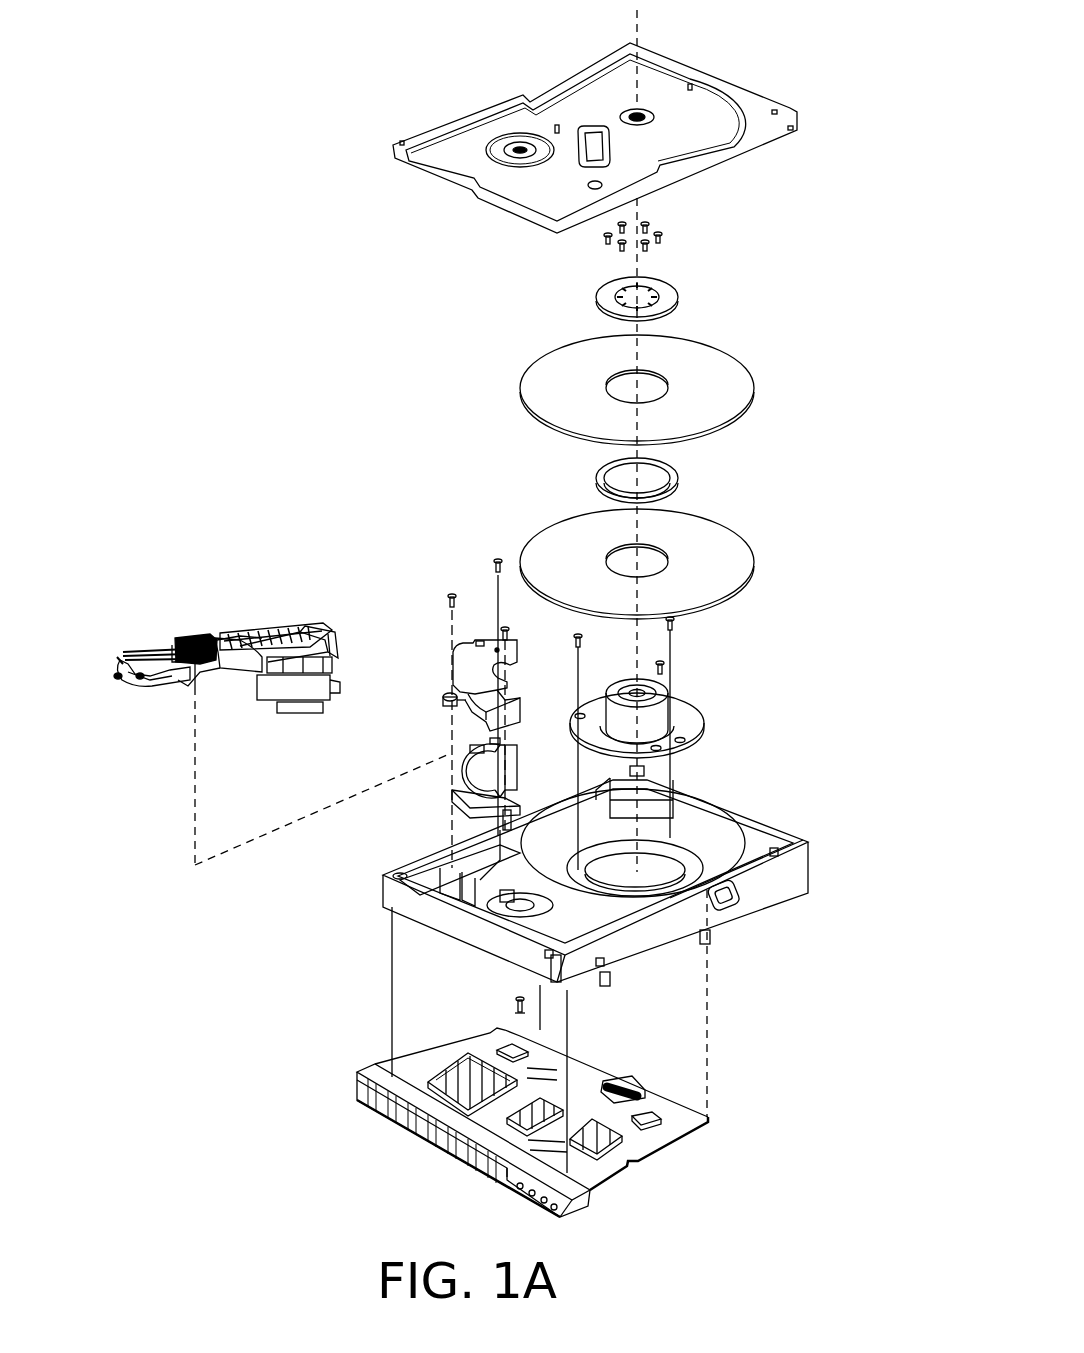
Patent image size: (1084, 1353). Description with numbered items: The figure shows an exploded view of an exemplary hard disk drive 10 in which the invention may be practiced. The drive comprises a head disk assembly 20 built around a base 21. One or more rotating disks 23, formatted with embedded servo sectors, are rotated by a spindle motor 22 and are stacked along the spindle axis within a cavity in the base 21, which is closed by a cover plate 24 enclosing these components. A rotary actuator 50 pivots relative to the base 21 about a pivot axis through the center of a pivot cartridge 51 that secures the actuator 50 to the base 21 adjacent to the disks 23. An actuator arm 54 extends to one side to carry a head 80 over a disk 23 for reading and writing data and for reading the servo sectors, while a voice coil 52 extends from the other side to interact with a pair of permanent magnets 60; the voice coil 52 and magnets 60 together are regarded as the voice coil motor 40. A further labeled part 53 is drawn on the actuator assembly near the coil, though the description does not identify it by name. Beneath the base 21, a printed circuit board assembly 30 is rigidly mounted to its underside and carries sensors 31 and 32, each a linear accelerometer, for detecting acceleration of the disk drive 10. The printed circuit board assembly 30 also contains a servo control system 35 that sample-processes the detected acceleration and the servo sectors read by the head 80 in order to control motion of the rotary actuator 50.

The hard disk drive 10 is at (268, 150).
The head disk assembly 20 is at (827, 5).
The base 21 is at (795, 834).
The spindle motor 22 is at (690, 712).
The rotating disk 23 is at (738, 362).
The cover plate 24 is at (764, 96).
The printed circuit board assembly 30 is at (607, 1170).
The sensor 31 is at (647, 1112).
The sensor 32 is at (500, 1046).
The servo control system 35 is at (583, 1137).
The voice coil motor 40 is at (515, 552).
The rotary actuator 50 is at (192, 605).
The pivot cartridge 51 is at (192, 636).
The voice coil 52 is at (127, 656).
The voice coil 53 is at (253, 637).
The actuator arm 54 is at (222, 642).
The permanent magnets 60 is at (450, 752).
The head 80 is at (310, 627).